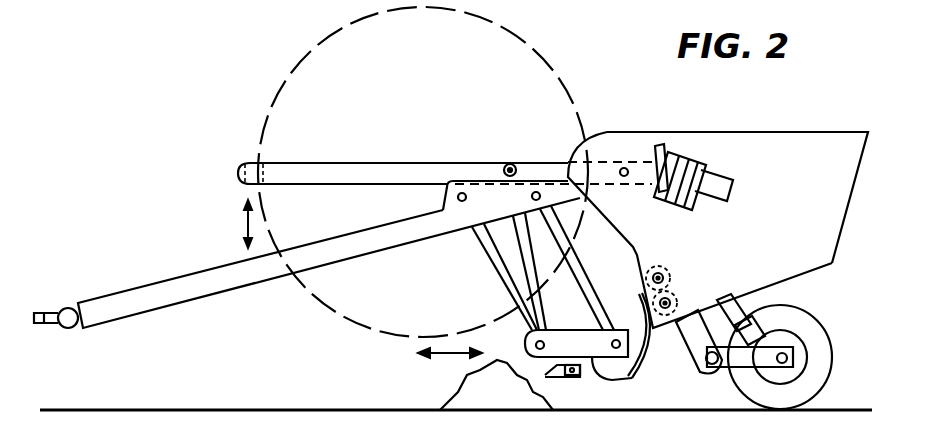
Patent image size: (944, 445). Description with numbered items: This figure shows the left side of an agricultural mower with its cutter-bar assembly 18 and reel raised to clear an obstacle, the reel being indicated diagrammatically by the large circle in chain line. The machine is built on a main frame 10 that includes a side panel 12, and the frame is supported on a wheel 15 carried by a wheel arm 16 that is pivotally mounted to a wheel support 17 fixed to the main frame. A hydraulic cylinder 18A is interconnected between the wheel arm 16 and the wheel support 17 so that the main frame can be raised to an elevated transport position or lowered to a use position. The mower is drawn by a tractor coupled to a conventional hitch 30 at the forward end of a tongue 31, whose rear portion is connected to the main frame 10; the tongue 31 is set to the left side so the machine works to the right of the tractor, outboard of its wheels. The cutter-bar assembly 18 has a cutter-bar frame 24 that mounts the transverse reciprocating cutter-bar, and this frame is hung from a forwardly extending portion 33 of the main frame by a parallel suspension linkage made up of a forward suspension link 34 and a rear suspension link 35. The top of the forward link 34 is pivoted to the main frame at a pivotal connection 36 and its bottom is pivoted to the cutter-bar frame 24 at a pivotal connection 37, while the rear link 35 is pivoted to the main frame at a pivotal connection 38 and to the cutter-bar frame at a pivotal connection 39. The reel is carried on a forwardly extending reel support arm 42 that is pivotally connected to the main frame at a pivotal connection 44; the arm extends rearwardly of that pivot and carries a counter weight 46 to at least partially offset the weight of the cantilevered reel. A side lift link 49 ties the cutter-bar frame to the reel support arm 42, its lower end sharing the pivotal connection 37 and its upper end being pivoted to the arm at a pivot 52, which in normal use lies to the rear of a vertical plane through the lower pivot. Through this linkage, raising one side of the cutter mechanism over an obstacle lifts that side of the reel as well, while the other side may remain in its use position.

The main frame 10 is at (766, 128).
The side panel 12 is at (805, 186).
The wheel 15 is at (826, 320).
The wheel arm 16 is at (750, 360).
The wheel support 17 is at (695, 337).
The cutter-bar assembly 18 is at (516, 347).
The hydraulic cylinder 18A is at (773, 287).
The cutter-bar frame 24 is at (607, 380).
The hitch 30 is at (52, 300).
The tongue 31 is at (180, 277).
The forwardly extending portion 33 is at (447, 207).
The forward suspension link 34 is at (500, 280).
The rear suspension link 35 is at (583, 268).
The pivotal connection 36 is at (462, 203).
The pivotal connection 37 is at (546, 346).
The pivotal connection 38 is at (540, 197).
The pivotal connection 39 is at (613, 328).
The reel support arm 42 is at (302, 163).
The pivotal connection 44 is at (626, 168).
The counter weight 46 is at (673, 210).
The side lift link 49 is at (558, 267).
The pivot 52 is at (517, 164).